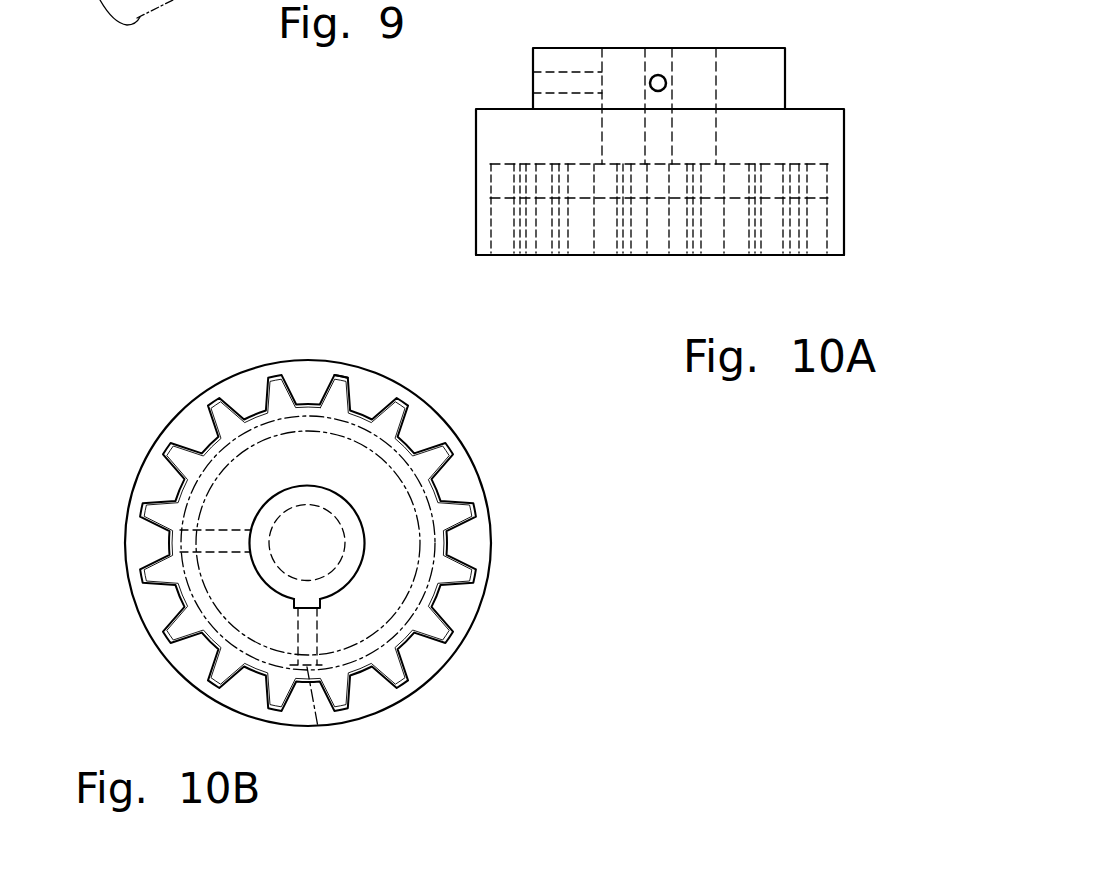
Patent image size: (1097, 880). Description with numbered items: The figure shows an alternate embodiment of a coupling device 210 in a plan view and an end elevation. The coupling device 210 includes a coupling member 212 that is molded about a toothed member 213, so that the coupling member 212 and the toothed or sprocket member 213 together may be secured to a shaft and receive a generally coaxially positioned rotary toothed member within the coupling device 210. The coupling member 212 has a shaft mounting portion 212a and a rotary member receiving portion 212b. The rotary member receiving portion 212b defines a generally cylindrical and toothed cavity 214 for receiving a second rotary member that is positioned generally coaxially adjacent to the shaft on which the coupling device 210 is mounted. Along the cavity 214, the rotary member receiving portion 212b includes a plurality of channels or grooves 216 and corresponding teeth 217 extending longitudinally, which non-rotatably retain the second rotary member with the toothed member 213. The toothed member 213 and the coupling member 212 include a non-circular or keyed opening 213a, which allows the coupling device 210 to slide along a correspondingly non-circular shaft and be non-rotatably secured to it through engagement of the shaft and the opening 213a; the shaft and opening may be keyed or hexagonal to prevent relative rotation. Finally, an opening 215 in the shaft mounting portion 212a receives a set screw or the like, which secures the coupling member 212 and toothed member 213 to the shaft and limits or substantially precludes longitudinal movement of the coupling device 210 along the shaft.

In FIG. 10A, the coupling device 210 is at (414, 152).
In FIG. 10B, the coupling device 210 is at (230, 336).
In FIG. 10A, the coupling member 212 is at (510, 98).
In FIG. 10B, the coupling member 212 is at (150, 422).
In FIG. 10A, the shaft mounting portion 212a is at (757, 60).
In FIG. 10A, the rotary member receiving portion 212b is at (478, 227).
In FIG. 10B, the rotary member receiving portion 212b is at (495, 537).
In FIG. 10A, the toothed member 213 is at (775, 177).
In FIG. 10B, the toothed member 213 is at (280, 368).
In FIG. 10A, the keyed opening 213a is at (644, 59).
In FIG. 10B, the keyed opening 213a is at (332, 582).
In FIG. 10A, the toothed cavity 214 is at (647, 262).
In FIG. 10B, the toothed cavity 214 is at (392, 488).
In FIG. 10A, the opening 215 is at (655, 72).
In FIG. 10B, the opening 215 is at (325, 735).
In FIG. 10B, the grooves 216 is at (343, 376).
In FIG. 10B, the teeth 217 is at (408, 440).